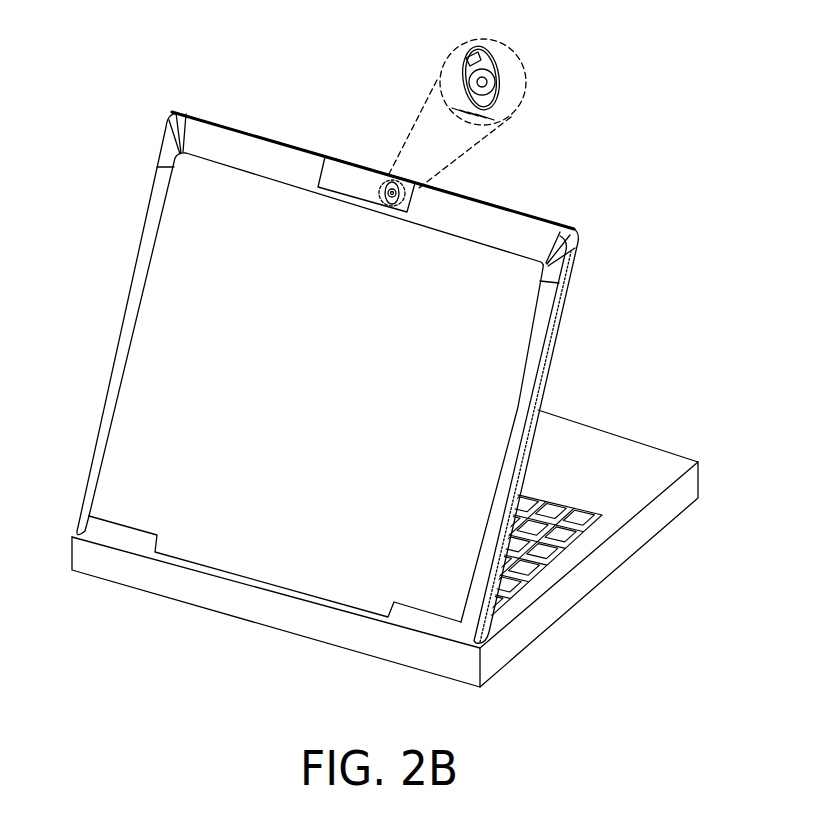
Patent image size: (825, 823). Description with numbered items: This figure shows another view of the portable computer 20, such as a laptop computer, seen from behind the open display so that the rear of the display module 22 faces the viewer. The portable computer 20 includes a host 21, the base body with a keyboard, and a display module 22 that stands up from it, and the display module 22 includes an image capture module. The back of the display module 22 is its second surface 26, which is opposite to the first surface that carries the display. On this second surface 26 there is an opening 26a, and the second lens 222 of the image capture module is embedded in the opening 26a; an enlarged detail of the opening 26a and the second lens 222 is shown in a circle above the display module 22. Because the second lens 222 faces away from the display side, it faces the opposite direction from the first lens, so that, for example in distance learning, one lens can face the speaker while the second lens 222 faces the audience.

The portable computer 20 is at (807, 621).
The host 21 is at (630, 492).
The display module 22 is at (468, 569).
The second surface 26 is at (332, 335).
The opening 26a is at (451, 110).
The second lens 222 is at (486, 83).